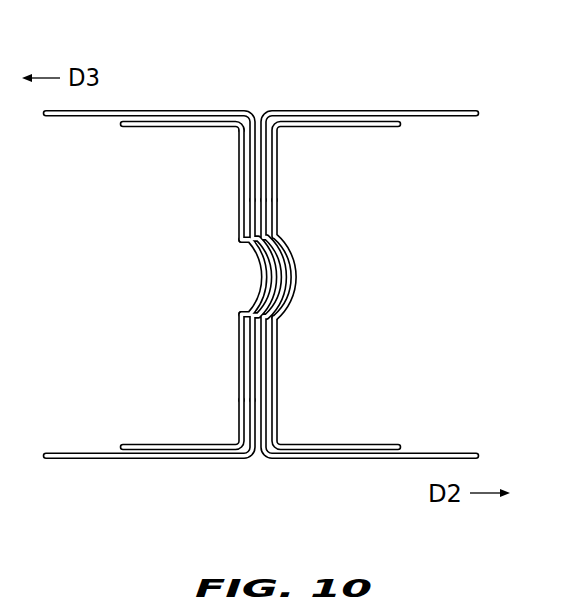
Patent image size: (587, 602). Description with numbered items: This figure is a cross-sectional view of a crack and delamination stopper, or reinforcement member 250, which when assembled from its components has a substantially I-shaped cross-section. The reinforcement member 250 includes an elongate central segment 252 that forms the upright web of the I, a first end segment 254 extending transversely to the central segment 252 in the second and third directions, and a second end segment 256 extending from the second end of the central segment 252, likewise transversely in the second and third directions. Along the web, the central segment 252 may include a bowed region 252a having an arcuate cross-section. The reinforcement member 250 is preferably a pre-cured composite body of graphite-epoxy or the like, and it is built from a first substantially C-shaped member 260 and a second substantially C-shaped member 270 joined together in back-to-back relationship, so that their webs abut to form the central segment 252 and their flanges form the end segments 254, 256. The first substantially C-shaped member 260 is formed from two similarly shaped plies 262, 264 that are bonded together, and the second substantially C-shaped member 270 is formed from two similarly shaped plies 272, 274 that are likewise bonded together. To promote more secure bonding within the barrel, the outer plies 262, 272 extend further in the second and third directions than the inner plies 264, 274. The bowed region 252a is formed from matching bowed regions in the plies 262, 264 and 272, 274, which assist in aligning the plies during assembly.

The reinforcement member 250 is at (290, 280).
The central segment 252 is at (284, 365).
The bowed region 252a is at (258, 280).
The first end segment 254 is at (282, 470).
The second end segment 256 is at (284, 100).
The first substantially C-shaped member 260 is at (292, 239).
The ply 262 is at (462, 117).
The ply 264 is at (382, 127).
The second substantially C-shaped member 270 is at (238, 218).
The ply 272 is at (82, 452).
The ply 274 is at (150, 444).